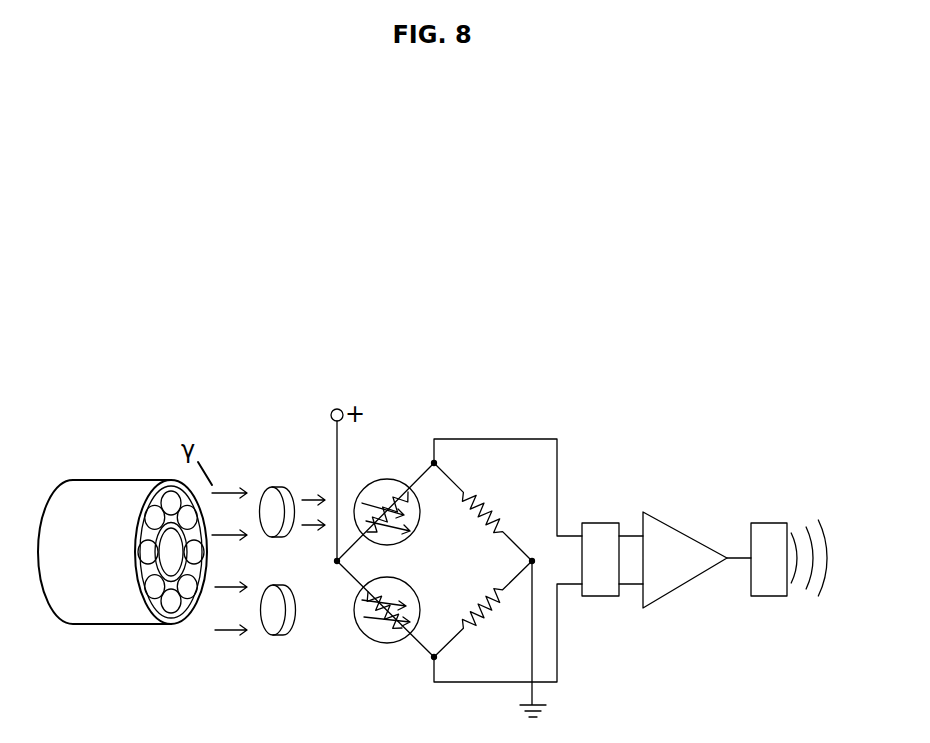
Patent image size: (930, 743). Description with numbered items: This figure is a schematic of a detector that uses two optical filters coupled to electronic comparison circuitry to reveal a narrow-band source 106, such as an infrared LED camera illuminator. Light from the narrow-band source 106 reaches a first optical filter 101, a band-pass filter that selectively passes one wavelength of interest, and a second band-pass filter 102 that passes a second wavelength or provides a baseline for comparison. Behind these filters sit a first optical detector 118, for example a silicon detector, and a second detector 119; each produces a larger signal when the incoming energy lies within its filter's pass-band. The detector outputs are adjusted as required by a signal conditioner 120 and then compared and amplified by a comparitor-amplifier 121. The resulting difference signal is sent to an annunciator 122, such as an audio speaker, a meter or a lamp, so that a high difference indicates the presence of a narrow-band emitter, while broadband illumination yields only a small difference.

The narrow-band source 106 is at (118, 598).
The first optical filter 101 is at (272, 502).
The band-pass filter 102 is at (273, 623).
The first optical detector 118 is at (388, 482).
The second detector 119 is at (378, 630).
The signal conditioner 120 is at (593, 532).
The comparitor-amplifier 121 is at (662, 535).
The annunciator 122 is at (770, 532).